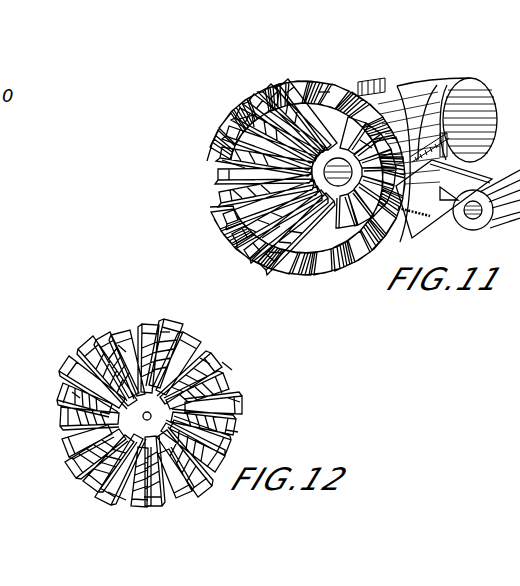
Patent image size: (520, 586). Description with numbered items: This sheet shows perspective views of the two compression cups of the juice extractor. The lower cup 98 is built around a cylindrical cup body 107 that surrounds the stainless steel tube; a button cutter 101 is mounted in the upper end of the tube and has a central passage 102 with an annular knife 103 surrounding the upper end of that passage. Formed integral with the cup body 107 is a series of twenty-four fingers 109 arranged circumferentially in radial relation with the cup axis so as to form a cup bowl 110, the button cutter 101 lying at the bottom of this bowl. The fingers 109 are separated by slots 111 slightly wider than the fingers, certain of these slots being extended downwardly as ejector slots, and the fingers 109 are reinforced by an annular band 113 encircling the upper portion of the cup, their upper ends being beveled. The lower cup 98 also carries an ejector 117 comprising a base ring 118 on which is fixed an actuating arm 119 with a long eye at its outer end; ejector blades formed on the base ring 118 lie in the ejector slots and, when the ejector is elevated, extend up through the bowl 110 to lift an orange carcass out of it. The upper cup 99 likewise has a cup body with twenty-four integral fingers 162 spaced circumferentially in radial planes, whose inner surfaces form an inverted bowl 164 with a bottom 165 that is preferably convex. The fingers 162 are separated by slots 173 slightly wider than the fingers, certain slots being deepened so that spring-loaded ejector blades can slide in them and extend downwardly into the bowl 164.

In FIG. 11, the lower cup 98 is at (287, 68).
In FIG. 11, the button cutter 101 is at (305, 137).
In FIG. 11, the central passage 102 is at (340, 186).
In FIG. 11, the annular knife 103 is at (366, 146).
In FIG. 11, the cup body 107 is at (426, 130).
In FIG. 11, the fingers 109 is at (238, 208).
In FIG. 11, the cup bowl 110 is at (230, 230).
In FIG. 11, the slots 111 is at (242, 148).
In FIG. 11, the annular band 113 is at (325, 92).
In FIG. 11, the ejector 117 is at (481, 159).
In FIG. 11, the base ring 118 is at (394, 98).
In FIG. 11, the actuating arm 119 is at (445, 205).
In FIG. 12, the upper cup 99 is at (257, 424).
In FIG. 12, the fingers 162 is at (156, 500).
In FIG. 12, the inverted bowl 164 is at (226, 364).
In FIG. 12, the bottom 165 is at (126, 350).
In FIG. 12, the slots 173 is at (200, 340).